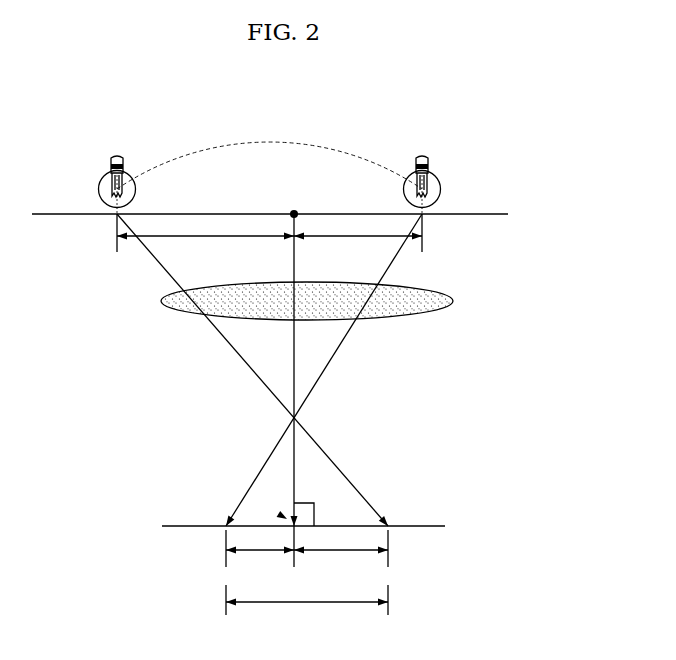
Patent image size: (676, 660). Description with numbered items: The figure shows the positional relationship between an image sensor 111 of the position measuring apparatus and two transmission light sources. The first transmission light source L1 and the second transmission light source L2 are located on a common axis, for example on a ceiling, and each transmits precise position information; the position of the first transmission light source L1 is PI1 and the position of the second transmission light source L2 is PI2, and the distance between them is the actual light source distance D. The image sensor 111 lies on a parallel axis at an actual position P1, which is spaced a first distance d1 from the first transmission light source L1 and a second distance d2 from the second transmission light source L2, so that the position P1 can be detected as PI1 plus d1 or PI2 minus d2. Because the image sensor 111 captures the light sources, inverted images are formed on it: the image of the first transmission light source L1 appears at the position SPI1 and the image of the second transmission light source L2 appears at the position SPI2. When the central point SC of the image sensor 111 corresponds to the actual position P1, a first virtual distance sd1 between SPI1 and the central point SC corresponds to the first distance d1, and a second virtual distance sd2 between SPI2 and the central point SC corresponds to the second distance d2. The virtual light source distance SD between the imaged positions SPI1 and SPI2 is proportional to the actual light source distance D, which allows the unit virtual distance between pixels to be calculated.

The first transmission light source L1 is at (117, 157).
The second transmission light source L2 is at (422, 157).
The actual light source distance D is at (269, 150).
The actual position of the image sensor P1 is at (294, 212).
The position of the first transmission light source PI1 is at (117, 215).
The position of the second transmission light source PI2 is at (422, 215).
The first distance d1 is at (205, 248).
The second distance d2 is at (358, 249).
The central point of the image sensor SC is at (280, 515).
The image sensor 111 is at (418, 526).
The position of the first transmission light source imaged on the image sensor SPI1 is at (388, 530).
The position of the second transmission light source imaged on the image sensor SPI2 is at (226, 530).
The first virtual distance sd1 is at (341, 565).
The second virtual distance sd2 is at (260, 565).
The virtual light source distance SD is at (307, 615).